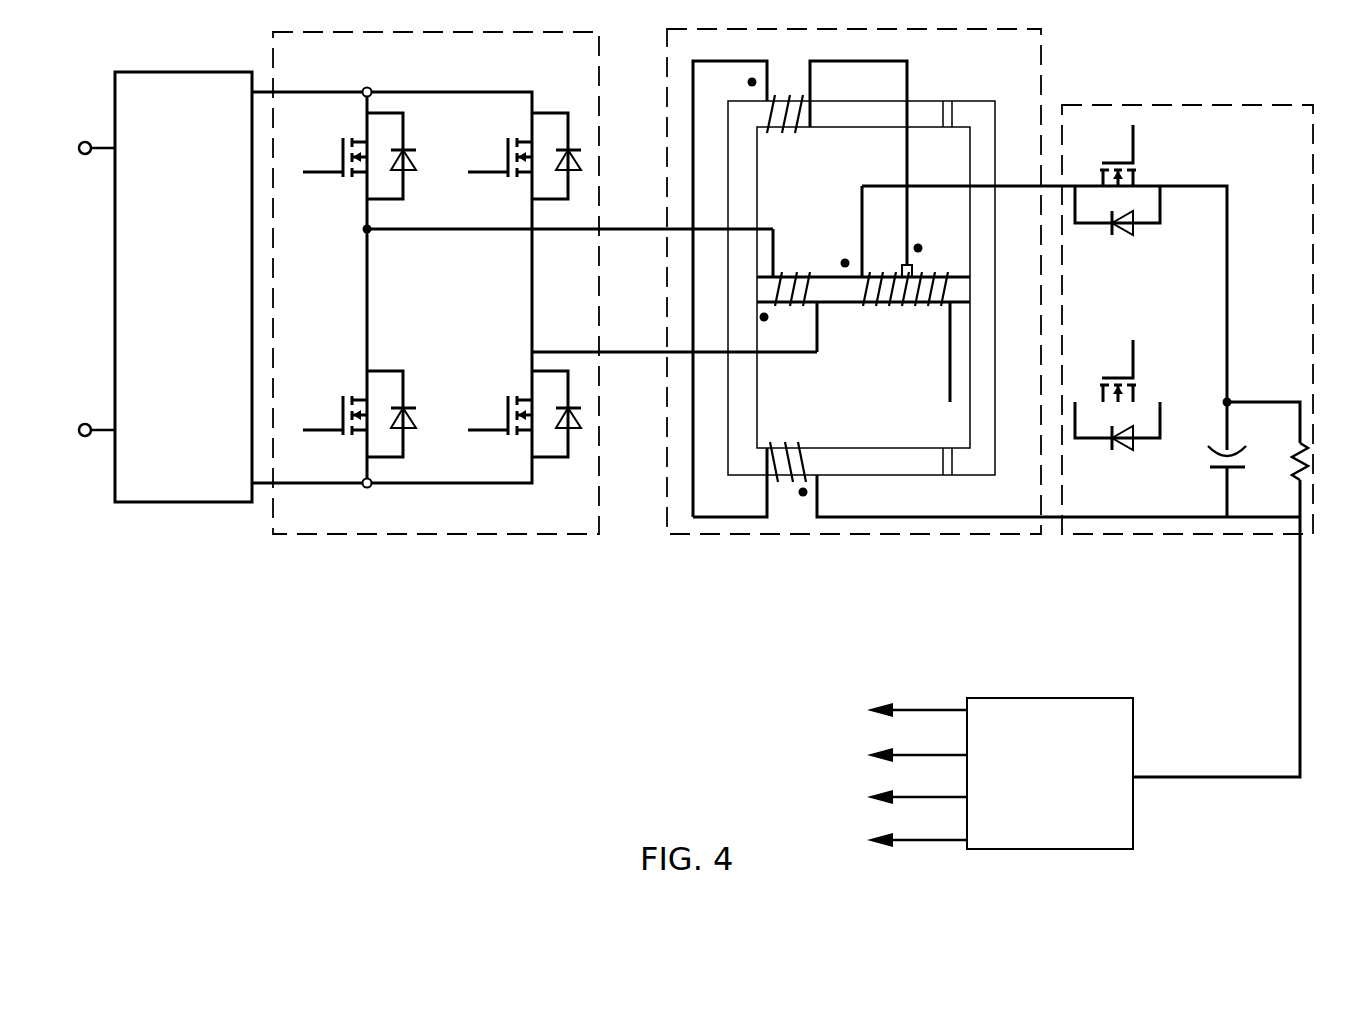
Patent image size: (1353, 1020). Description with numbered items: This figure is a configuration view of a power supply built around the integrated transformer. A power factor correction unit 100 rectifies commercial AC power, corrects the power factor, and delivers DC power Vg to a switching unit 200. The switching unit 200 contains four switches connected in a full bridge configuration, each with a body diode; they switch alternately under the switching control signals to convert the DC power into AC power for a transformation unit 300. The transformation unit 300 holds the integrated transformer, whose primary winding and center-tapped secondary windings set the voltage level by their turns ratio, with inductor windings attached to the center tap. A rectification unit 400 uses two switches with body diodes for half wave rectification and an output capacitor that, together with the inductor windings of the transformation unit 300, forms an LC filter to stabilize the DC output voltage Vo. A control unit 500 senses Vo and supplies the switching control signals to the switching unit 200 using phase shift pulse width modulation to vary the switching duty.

The power factor correction unit 100 is at (160, 502).
The switching unit 200 is at (430, 535).
The transformation unit 300 is at (823, 535).
The rectification unit 400 is at (1190, 535).
The control unit 500 is at (1043, 698).